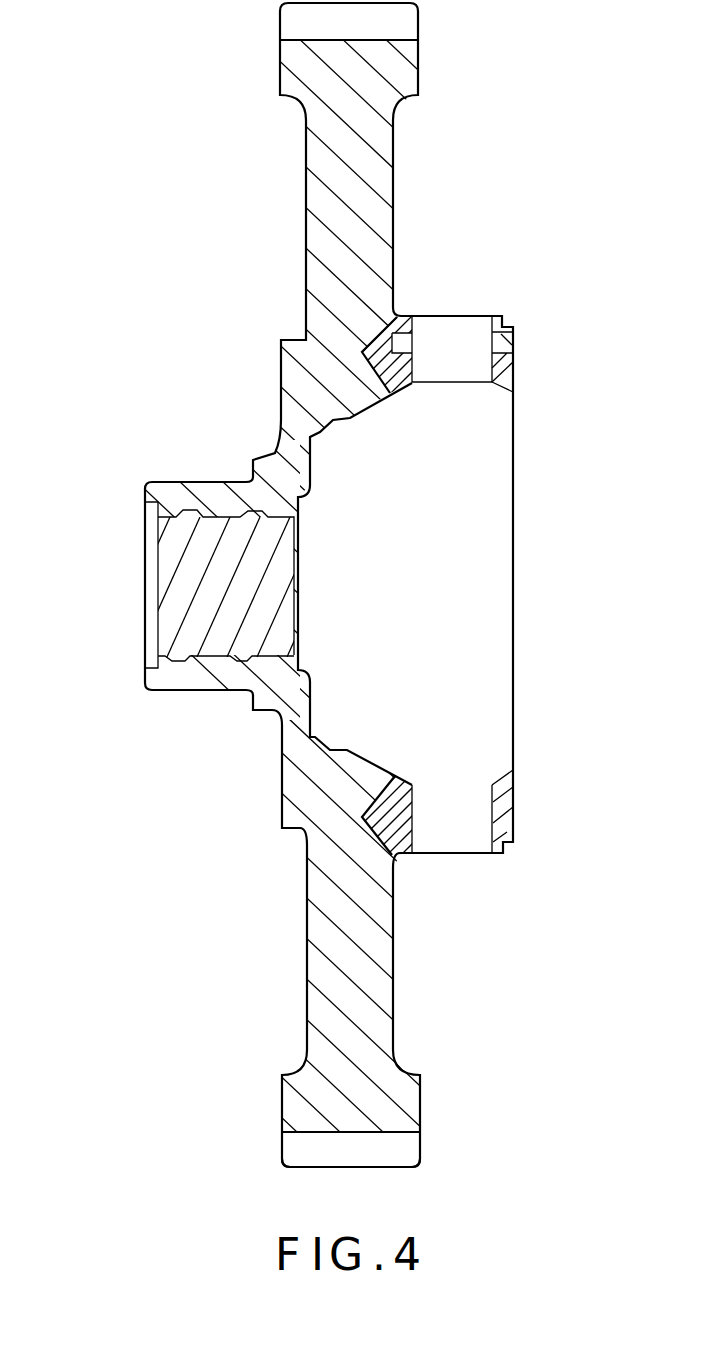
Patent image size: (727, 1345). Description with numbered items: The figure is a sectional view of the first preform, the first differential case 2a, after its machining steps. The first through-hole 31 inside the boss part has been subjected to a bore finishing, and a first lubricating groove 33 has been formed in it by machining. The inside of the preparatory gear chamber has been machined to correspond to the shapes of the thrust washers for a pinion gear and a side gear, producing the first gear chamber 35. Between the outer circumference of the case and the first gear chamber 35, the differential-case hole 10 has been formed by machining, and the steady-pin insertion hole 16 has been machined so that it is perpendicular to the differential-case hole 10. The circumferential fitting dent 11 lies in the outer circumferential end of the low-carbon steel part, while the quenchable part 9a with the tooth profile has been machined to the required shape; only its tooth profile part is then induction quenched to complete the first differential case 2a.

The first differential case 2a is at (306, 185).
The quenchable part with the tooth profile 9a is at (403, 1150).
The differential-case hole 10 is at (413, 363).
The steady-pin insertion hole 16 is at (513, 340).
The circumferential fitting dent 11 is at (506, 848).
The first through-hole 31 is at (223, 518).
The first lubricating groove 33 is at (178, 660).
The first gear chamber 35 is at (378, 763).